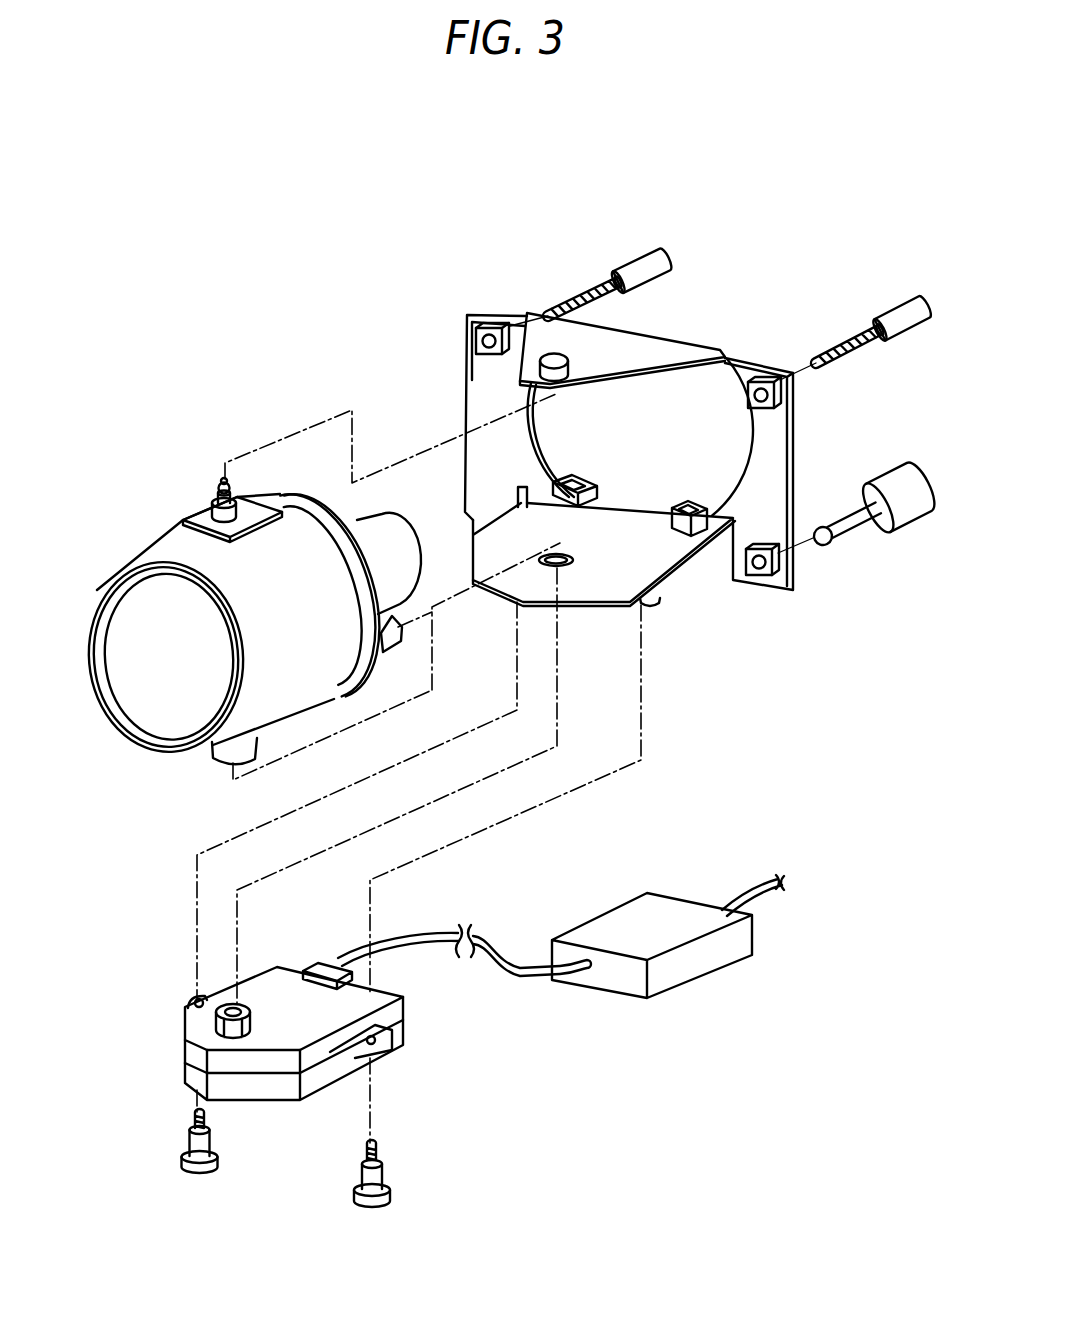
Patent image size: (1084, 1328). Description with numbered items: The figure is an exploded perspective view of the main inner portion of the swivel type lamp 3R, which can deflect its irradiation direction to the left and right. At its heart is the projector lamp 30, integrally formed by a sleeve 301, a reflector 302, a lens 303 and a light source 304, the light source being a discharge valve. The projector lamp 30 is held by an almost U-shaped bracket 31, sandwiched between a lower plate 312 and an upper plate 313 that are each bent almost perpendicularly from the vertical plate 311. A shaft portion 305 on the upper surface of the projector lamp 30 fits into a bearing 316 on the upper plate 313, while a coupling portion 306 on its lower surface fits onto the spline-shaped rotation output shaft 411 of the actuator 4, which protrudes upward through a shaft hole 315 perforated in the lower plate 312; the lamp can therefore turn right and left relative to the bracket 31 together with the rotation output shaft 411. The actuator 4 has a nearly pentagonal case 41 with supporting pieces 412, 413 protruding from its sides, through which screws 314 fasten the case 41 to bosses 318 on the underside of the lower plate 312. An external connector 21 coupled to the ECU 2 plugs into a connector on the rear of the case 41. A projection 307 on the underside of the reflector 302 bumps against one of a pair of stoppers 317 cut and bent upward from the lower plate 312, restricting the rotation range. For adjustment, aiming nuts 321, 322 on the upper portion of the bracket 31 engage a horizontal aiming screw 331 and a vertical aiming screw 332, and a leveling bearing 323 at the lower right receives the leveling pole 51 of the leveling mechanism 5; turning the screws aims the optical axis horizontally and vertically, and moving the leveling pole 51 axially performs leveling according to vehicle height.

The swivel type lamp 3R is at (532, 186).
The projector lamp 30 is at (122, 523).
The sleeve 301 is at (300, 686).
The reflector 302 is at (397, 606).
The lens 303 is at (127, 698).
The light source 304 is at (410, 552).
The shaft portion 305 is at (220, 492).
The coupling portion 306 is at (216, 767).
The projection 307 is at (403, 634).
The bracket 31 is at (450, 300).
The vertical plate 311 is at (768, 466).
The lower plate 312 is at (668, 548).
The upper plate 313 is at (670, 352).
The screws 314 is at (212, 1172).
The shaft hole 315 is at (558, 567).
The bearing 316 is at (542, 364).
The stoppers 317 is at (690, 505).
The boss 318 is at (650, 604).
The aiming nut 321 is at (490, 326).
The aiming nut 322 is at (762, 380).
The leveling bearing 323 is at (760, 578).
The horizontal aiming screw 331 is at (645, 262).
The vertical aiming screw 332 is at (900, 300).
The leveling mechanism 5 is at (905, 530).
The leveling pole 51 is at (823, 546).
The actuator 4 is at (405, 1000).
The case 41 is at (282, 1100).
The rotation output shaft 411 is at (215, 1025).
The supporting piece 412 is at (375, 1047).
The supporting piece 413 is at (195, 1003).
The external connector 21 is at (328, 966).
The ECU 2 is at (712, 962).